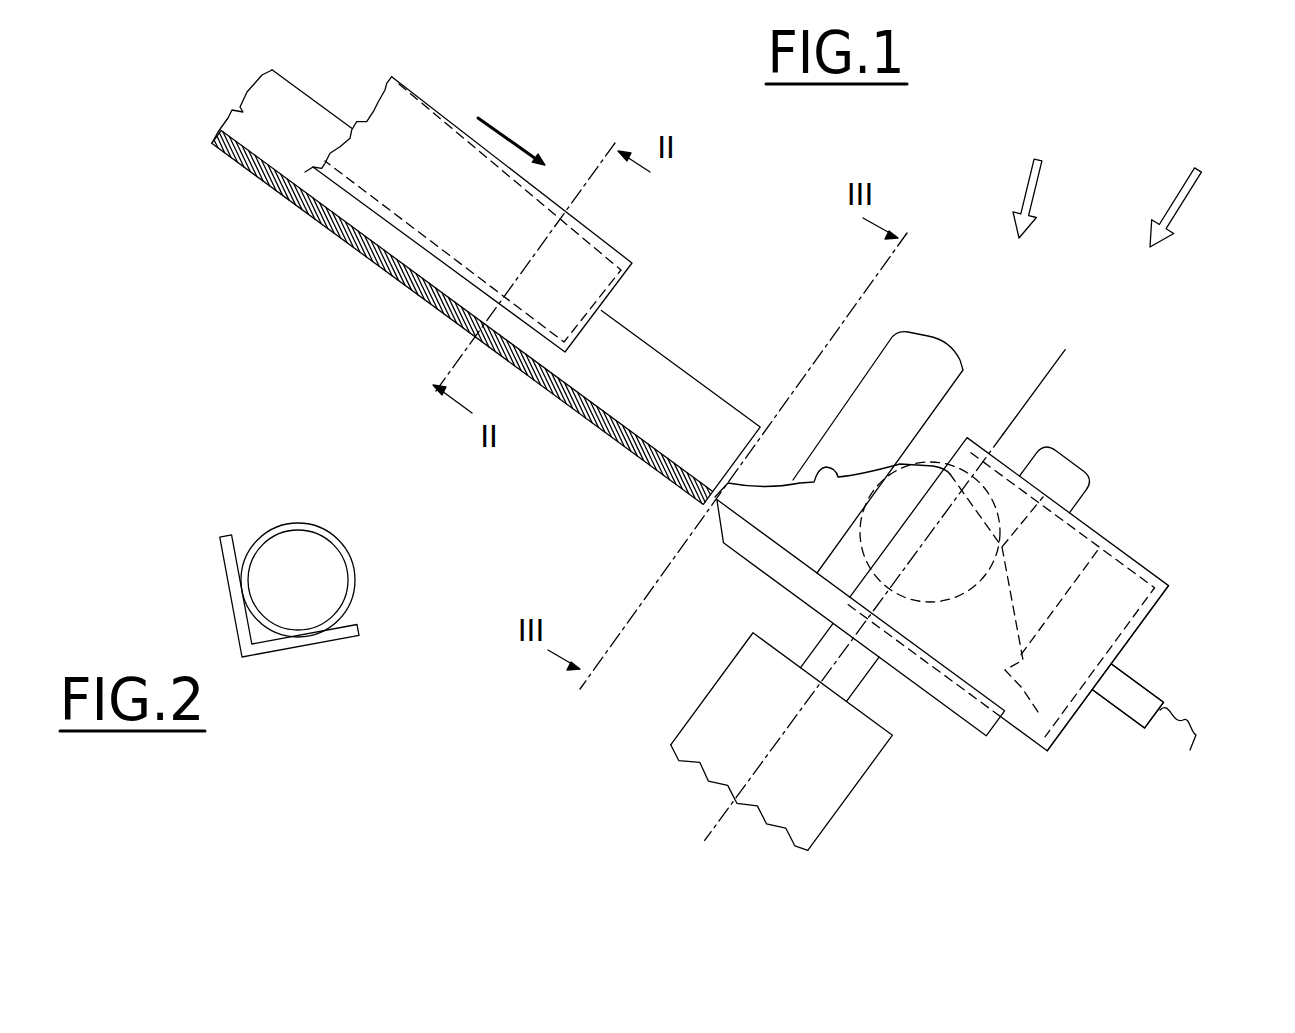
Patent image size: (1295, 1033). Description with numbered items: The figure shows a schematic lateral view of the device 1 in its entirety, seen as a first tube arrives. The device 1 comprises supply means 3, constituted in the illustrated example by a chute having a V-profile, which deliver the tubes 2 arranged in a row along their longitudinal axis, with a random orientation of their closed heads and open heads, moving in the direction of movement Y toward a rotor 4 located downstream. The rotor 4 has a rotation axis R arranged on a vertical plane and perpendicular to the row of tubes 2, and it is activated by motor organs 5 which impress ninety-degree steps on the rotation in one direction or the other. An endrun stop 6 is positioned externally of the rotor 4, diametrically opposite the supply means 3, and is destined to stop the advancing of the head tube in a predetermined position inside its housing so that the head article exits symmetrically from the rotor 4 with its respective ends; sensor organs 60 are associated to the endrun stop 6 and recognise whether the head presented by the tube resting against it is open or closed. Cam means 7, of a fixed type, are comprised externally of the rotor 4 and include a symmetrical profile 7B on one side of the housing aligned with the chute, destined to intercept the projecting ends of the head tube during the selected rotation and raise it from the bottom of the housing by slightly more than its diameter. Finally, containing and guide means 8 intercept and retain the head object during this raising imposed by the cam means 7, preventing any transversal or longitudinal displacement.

In FIG. 1, the device 1 is at (1033, 176).
In FIG. 1, the tubes 2 is at (431, 110).
In FIG. 2, the tubes 2 is at (300, 524).
In FIG. 1, the supply means 3 is at (270, 137).
In FIG. 2, the supply means 3 is at (316, 640).
In FIG. 1, the rotor 4 is at (1092, 405).
In FIG. 1, the motor organs 5 is at (826, 803).
In FIG. 1, the endrun stop 6 is at (1143, 626).
In FIG. 1, the cam means 7 is at (942, 445).
In FIG. 1, the symmetrical profile 7B is at (814, 482).
In FIG. 1, the containing and guide means 8 is at (1182, 528).
In FIG. 1, the sensor organs 60 is at (1127, 703).
In FIG. 1, the rotation axis R is at (735, 830).
In FIG. 1, the direction of movement Y is at (1181, 191).